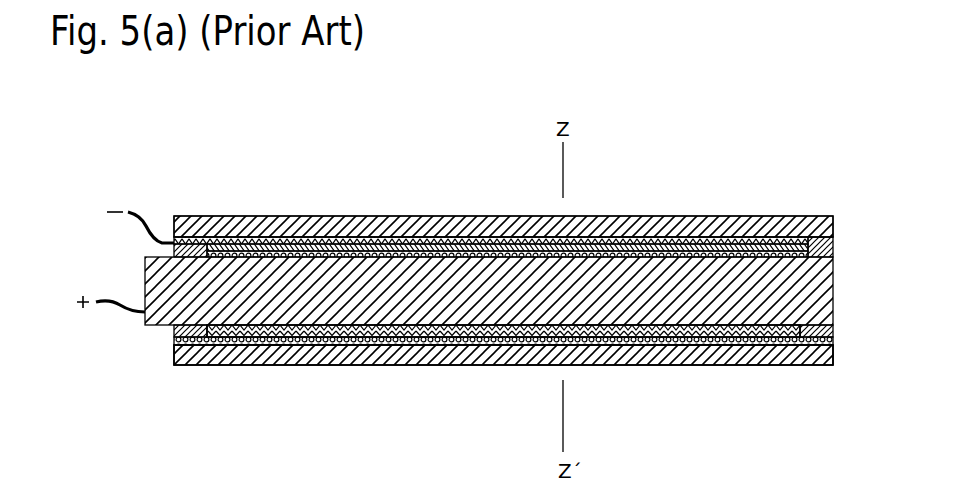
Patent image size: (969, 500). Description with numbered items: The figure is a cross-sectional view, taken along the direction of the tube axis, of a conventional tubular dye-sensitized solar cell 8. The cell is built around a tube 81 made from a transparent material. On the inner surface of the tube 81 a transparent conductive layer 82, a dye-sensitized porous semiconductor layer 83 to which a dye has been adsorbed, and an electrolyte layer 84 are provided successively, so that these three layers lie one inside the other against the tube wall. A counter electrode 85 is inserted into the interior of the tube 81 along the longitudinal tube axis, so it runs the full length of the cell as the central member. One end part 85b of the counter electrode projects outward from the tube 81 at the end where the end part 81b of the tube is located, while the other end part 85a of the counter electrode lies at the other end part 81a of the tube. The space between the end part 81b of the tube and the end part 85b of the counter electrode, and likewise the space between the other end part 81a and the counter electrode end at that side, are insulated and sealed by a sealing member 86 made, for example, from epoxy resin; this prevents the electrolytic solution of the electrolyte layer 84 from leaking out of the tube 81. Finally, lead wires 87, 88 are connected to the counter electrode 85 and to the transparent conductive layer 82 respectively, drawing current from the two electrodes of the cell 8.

The solar cell 8 is at (466, 184).
The tube 81 is at (340, 216).
The other end part of the tube 81a is at (820, 365).
The end part of the tube 81b is at (188, 357).
The transparent conductive layer 82 is at (500, 343).
The dye-sensitized porous semiconductor layer 83 is at (418, 343).
The electrolyte layer 84 is at (355, 340).
The counter electrode 85 is at (641, 294).
The end part of the counter electrode 85a is at (833, 285).
The end part of the counter electrode 85b is at (159, 328).
The sealing member 86 is at (807, 246).
The lead wire 87 is at (113, 311).
The lead wire 88 is at (147, 228).